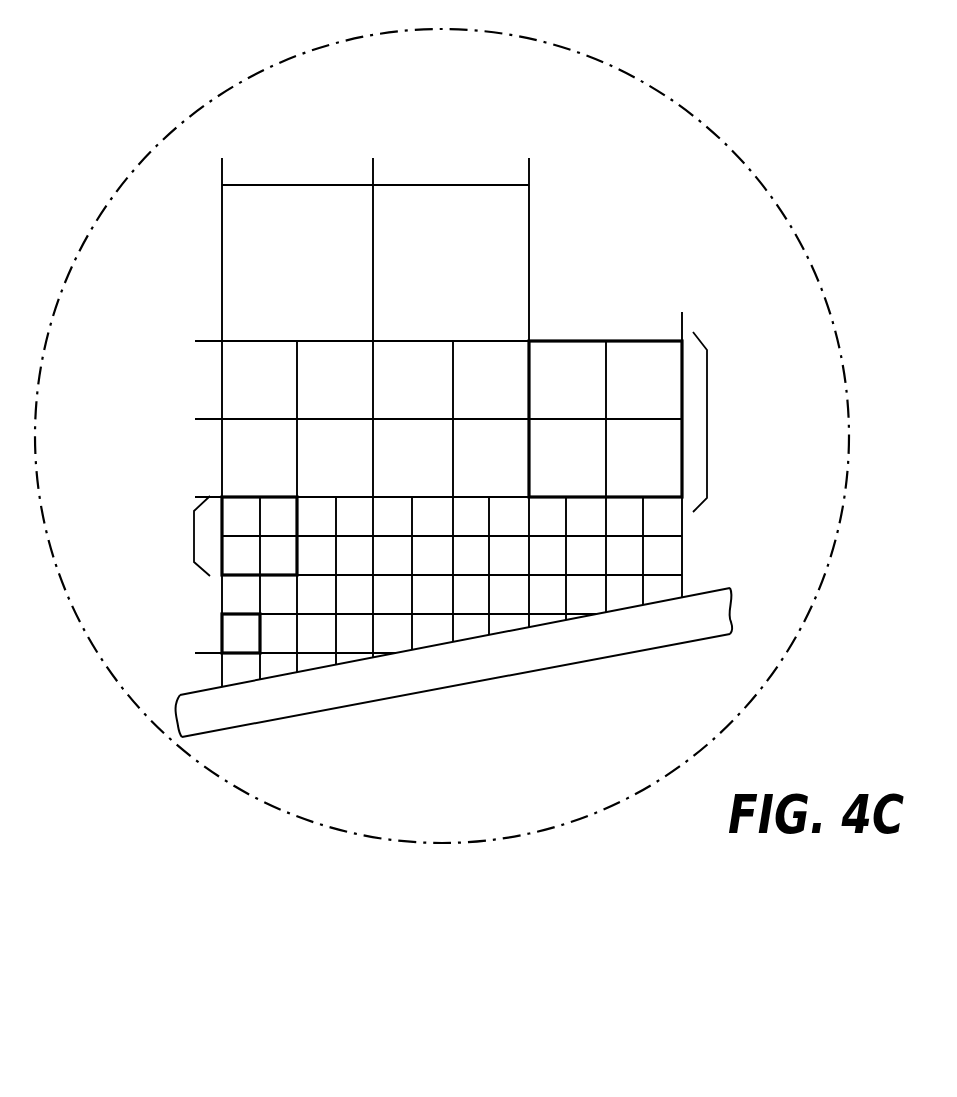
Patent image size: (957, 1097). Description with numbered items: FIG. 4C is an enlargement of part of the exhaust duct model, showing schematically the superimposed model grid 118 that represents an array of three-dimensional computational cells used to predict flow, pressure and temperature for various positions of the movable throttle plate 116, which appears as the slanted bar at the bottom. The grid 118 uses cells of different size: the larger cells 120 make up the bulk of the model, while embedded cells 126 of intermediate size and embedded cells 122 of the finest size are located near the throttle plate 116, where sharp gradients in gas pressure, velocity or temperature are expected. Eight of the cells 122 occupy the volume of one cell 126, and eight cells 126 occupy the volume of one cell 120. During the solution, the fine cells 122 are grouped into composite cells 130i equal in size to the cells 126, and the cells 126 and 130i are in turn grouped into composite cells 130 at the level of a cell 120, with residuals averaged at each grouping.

The throttle plate 116 is at (603, 659).
The model grid 118 is at (618, 256).
The larger cells 120 is at (507, 230).
The embedded grid cells 122 is at (232, 627).
The embedded cells 126 is at (245, 380).
The composite cells 130 is at (192, 534).
The composite cells 130i is at (705, 418).